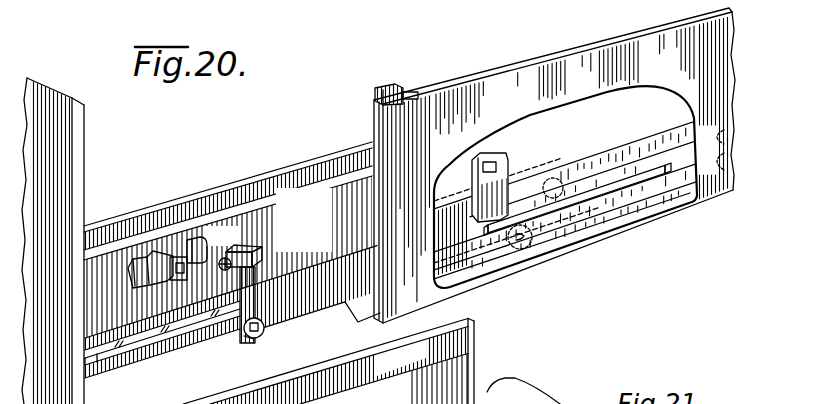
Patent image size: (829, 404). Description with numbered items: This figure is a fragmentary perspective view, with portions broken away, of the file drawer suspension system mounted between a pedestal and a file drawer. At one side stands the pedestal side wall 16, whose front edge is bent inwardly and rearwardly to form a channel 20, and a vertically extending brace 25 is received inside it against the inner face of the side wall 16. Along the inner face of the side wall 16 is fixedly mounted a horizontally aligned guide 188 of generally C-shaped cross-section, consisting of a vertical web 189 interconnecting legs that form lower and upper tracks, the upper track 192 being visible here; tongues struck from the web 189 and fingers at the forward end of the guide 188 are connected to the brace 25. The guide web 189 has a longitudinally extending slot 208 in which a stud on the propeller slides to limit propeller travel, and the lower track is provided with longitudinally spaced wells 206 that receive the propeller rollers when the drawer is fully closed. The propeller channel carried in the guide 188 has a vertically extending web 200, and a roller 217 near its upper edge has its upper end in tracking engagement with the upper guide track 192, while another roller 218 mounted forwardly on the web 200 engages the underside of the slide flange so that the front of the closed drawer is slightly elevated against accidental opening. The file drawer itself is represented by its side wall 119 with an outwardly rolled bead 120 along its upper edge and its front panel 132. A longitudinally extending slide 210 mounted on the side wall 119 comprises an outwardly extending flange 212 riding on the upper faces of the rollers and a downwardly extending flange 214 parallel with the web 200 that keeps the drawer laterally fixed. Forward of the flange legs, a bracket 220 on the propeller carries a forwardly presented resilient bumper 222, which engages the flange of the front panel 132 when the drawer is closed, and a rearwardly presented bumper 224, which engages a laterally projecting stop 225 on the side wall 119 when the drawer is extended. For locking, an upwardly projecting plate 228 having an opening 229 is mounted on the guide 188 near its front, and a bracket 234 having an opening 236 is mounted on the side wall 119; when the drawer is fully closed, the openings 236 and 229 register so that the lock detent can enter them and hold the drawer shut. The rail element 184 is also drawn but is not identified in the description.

The side wall 16 is at (600, 60).
The channel 20 is at (378, 92).
The brace 25 is at (407, 91).
The side wall 119 is at (326, 249).
The bead 120 is at (220, 185).
The front panel 132 is at (79, 169).
The side rail 184 is at (289, 178).
The guide 188 is at (636, 197).
The web 189 is at (670, 188).
The upper track 192 is at (619, 150).
The web 200 is at (323, 305).
The well 206 is at (521, 248).
The slot 208 is at (590, 194).
The slide 210 is at (151, 338).
The flange 212 is at (134, 345).
The flange 214 is at (193, 340).
The roller 217 is at (567, 172).
The roller 218 is at (258, 342).
The bracket 220 is at (250, 246).
The resilient bumper 222 is at (225, 270).
The bumper 224 is at (258, 258).
The stop 225 is at (473, 388).
The plate 228 is at (504, 172).
The opening 229 is at (494, 163).
The bracket 234 is at (199, 256).
The opening 236 is at (136, 270).